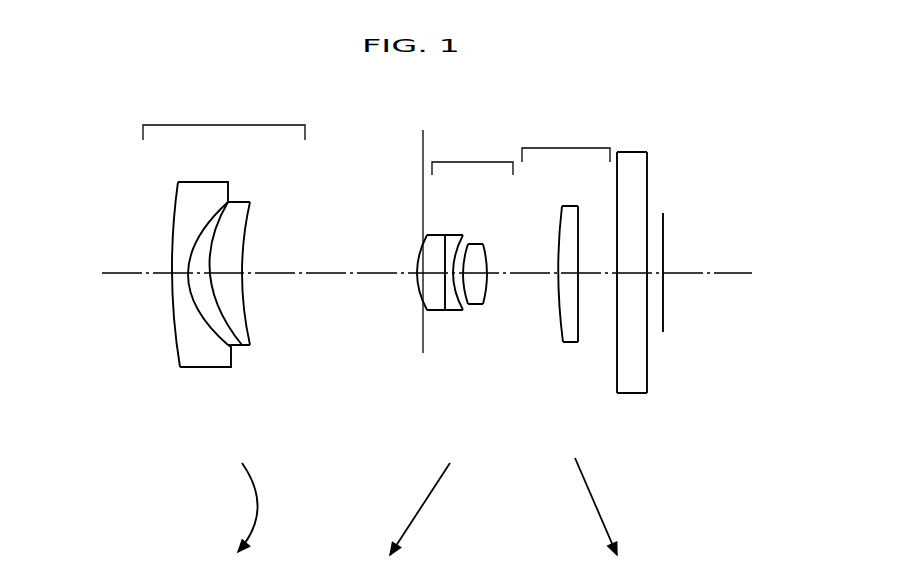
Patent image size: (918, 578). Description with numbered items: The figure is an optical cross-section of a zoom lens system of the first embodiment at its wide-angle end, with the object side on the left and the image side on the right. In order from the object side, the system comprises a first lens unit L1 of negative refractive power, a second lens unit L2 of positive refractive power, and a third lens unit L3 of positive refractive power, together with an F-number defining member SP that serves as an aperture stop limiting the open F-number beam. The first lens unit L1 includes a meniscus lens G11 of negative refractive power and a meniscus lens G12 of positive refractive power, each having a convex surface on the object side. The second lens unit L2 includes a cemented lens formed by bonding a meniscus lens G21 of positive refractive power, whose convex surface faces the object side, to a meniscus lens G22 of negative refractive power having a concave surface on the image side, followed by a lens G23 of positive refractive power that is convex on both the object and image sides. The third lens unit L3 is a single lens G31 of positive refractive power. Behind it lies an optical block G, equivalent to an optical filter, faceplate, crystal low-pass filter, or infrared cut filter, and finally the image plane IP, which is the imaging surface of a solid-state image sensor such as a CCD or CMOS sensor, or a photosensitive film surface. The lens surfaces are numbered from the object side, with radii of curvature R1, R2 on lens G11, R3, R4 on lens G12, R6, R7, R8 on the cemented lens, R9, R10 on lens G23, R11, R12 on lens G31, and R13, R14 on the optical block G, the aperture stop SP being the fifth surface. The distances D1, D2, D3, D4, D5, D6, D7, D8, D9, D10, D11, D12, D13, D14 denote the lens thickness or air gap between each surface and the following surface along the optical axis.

The first lens unit L1 is at (224, 120).
The second lens unit L2 is at (472, 158).
The third lens unit L3 is at (566, 145).
The meniscus lens G11 is at (176, 252).
The meniscus lens G12 is at (255, 254).
The meniscus lens G21 is at (410, 250).
The meniscus lens G22 is at (429, 316).
The lens G23 is at (494, 327).
The lens G31 is at (576, 313).
The optical block G is at (647, 237).
The F-number defining member SP is at (382, 241).
The image plane IP is at (663, 217).
The radius of curvature of the first lens surface R1 is at (178, 182).
The radius of curvature of the second lens surface R2 is at (228, 182).
The radius of curvature of the third lens surface R3 is at (235, 202).
The radius of curvature of the fourth lens surface R4 is at (250, 202).
The radius of curvature of the sixth lens surface R6 is at (430, 235).
The radius of curvature of the seventh lens surface R7 is at (445, 235).
The radius of curvature of the eighth lens surface R8 is at (463, 235).
The radius of curvature of the ninth lens surface R9 is at (470, 243).
The radius of curvature of the tenth lens surface R10 is at (480, 243).
The radius of curvature of the eleventh lens surface R11 is at (563, 206).
The radius of curvature of the twelfth lens surface R12 is at (578, 206).
The radius of curvature of the thirteenth surface R13 is at (617, 152).
The radius of curvature of the fourteenth surface R14 is at (647, 152).
The lens thickness or air gap between the first and second surfaces D1 is at (182, 273).
The lens thickness or air gap between the second and third surfaces D2 is at (199, 273).
The lens thickness or air gap between the third and fourth surfaces D3 is at (228, 273).
The lens thickness or air gap between the fourth and fifth surfaces D4 is at (307, 273).
The lens thickness or air gap between the fifth and sixth surfaces D5 is at (415, 303).
The lens thickness or air gap between the sixth and seventh surfaces D6 is at (425, 305).
The lens thickness or air gap between the seventh and eighth surfaces D7 is at (455, 313).
The lens thickness or air gap between the eighth and ninth surfaces D8 is at (461, 273).
The lens thickness or air gap between the ninth and tenth surfaces D9 is at (487, 303).
The lens thickness or air gap between the tenth and eleventh surfaces D10 is at (530, 277).
The lens thickness or air gap between the eleventh and twelfth surfaces D11 is at (573, 332).
The lens thickness or air gap between the twelfth and thirteenth surfaces D12 is at (593, 275).
The lens thickness or air gap between the thirteenth and fourteenth surfaces D13 is at (627, 275).
The lens thickness or air gap between the fourteenth surface and the image plane D14 is at (653, 277).